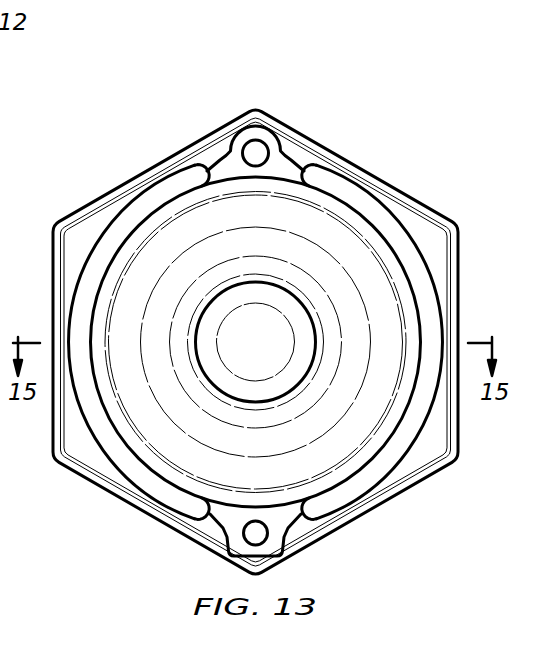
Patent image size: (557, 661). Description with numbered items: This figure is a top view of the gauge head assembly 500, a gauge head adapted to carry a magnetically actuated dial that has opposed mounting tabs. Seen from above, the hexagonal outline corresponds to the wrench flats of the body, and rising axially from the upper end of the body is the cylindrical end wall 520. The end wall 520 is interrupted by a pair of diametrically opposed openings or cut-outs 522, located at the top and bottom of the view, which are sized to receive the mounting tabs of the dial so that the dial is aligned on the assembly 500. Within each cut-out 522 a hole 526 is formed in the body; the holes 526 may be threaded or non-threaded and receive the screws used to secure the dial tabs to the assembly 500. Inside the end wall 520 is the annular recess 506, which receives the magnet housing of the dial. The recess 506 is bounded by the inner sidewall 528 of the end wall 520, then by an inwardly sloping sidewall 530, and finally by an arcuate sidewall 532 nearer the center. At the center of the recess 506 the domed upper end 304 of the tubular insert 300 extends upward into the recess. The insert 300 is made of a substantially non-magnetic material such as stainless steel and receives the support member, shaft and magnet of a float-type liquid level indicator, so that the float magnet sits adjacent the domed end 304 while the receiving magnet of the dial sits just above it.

The gauge head assembly 500 is at (284, 289).
The cylindrical end wall 520 is at (398, 443).
The cut-out 522 is at (275, 146).
The hole 526 is at (254, 147).
The inner sidewall 528 is at (368, 230).
The inwardly sloping sidewall 530 is at (373, 280).
The annular recess 506 is at (148, 236).
The arcuate sidewall 532 is at (312, 397).
The tubular insert 300 is at (265, 273).
The domed upper end 304 is at (237, 300).